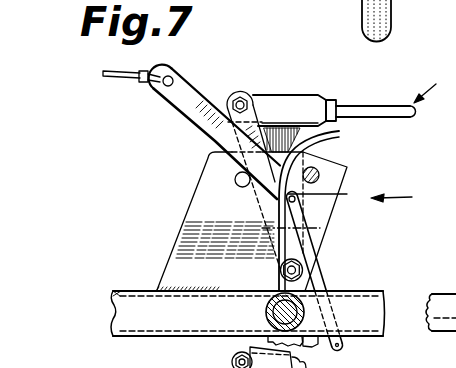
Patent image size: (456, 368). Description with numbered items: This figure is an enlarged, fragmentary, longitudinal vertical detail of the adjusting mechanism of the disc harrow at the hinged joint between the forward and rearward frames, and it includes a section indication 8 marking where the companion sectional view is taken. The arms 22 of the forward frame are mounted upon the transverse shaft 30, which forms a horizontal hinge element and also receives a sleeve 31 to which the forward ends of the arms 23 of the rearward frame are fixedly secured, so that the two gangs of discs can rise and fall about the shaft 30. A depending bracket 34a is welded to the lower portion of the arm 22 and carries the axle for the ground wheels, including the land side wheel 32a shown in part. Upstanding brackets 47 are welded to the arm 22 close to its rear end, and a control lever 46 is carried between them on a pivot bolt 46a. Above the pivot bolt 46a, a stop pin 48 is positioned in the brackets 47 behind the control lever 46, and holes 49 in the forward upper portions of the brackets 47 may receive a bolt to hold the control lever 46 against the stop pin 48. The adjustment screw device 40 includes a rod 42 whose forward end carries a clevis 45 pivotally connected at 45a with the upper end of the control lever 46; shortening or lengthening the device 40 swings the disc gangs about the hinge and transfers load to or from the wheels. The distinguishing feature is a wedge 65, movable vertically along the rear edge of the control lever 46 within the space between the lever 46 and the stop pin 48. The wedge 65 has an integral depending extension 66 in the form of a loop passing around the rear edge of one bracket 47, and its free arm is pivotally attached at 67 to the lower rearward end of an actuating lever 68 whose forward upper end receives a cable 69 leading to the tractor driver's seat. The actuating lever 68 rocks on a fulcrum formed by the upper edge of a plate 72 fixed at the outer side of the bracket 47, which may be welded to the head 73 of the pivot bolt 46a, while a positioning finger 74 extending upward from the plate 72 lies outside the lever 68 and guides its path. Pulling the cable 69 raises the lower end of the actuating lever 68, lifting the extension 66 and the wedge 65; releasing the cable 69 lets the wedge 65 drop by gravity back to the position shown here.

The section line 8 is at (391, 190).
The arms 22 is at (114, 292).
The arms 23 is at (340, 290).
The transverse shaft 30 is at (266, 312).
The sleeve 31 is at (262, 292).
The land side wheel 32a is at (352, 1).
The depending bracket 34a is at (312, 338).
The adjustment screw device 40 is at (433, 83).
The rod 42 is at (388, 92).
The clevis 45 is at (290, 97).
The pivotal connection 45a is at (232, 94).
The control lever 46 is at (258, 104).
The pivot bolt 46a is at (311, 256).
The upstanding bracket 47 is at (196, 203).
The stop pin 48 is at (318, 171).
The holes 49 is at (236, 173).
The wedge 65 is at (313, 139).
The depending extension 66 is at (346, 346).
The pivotal attachment 67 is at (303, 198).
The actuating lever 68 is at (182, 113).
The cable 69 is at (103, 76).
The plate 72 is at (273, 214).
The head 73 is at (291, 238).
The positioning finger 74 is at (327, 100).